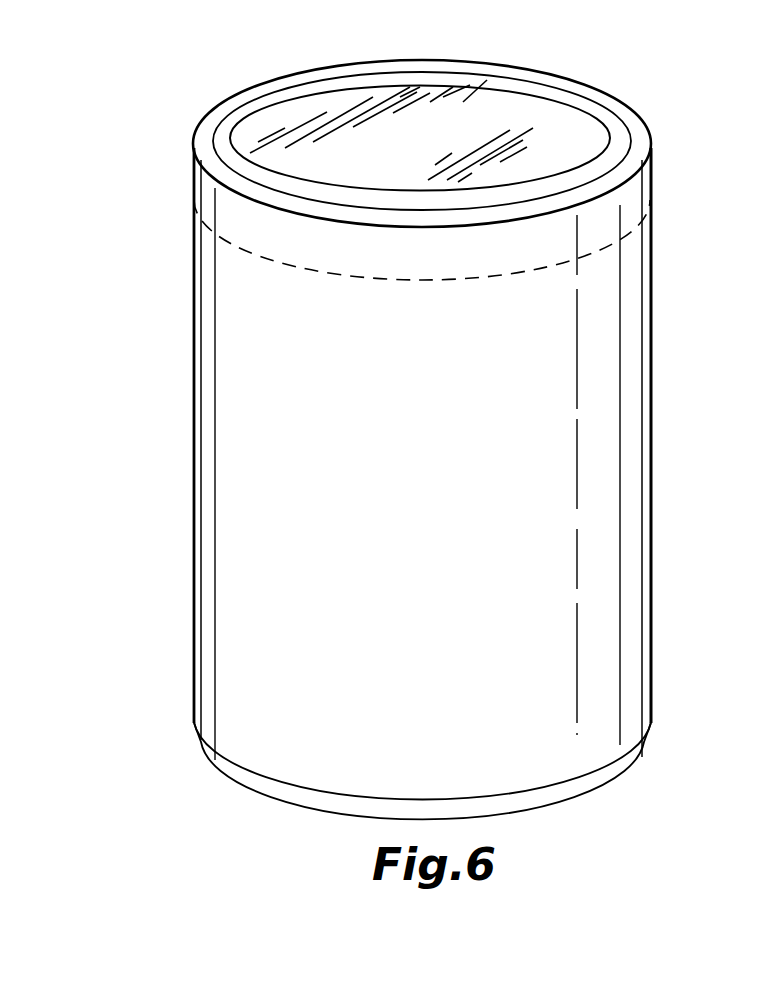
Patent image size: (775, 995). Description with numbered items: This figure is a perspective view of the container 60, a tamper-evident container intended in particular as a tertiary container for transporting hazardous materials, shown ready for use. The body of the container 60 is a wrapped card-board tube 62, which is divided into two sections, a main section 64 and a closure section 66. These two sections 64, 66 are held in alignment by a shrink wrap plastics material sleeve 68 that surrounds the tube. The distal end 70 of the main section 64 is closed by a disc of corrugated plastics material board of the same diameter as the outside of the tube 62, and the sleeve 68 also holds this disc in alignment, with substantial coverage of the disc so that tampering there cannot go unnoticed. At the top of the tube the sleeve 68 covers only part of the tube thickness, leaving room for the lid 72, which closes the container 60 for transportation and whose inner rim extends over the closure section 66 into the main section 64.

The container 60 is at (660, 587).
The wrapped card-board tube 62 is at (630, 394).
The main section 64 is at (197, 489).
The closure section 66 is at (193, 176).
The shrink wrap plastics material sleeve 68 is at (465, 607).
The distal end 70 is at (297, 805).
The lid 72 is at (477, 126).